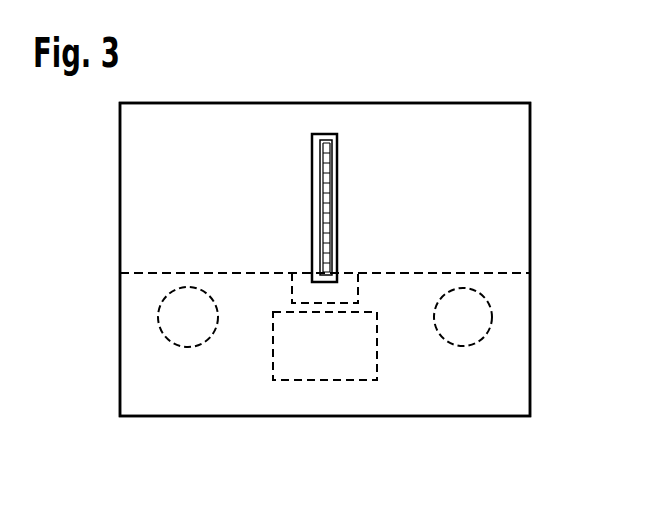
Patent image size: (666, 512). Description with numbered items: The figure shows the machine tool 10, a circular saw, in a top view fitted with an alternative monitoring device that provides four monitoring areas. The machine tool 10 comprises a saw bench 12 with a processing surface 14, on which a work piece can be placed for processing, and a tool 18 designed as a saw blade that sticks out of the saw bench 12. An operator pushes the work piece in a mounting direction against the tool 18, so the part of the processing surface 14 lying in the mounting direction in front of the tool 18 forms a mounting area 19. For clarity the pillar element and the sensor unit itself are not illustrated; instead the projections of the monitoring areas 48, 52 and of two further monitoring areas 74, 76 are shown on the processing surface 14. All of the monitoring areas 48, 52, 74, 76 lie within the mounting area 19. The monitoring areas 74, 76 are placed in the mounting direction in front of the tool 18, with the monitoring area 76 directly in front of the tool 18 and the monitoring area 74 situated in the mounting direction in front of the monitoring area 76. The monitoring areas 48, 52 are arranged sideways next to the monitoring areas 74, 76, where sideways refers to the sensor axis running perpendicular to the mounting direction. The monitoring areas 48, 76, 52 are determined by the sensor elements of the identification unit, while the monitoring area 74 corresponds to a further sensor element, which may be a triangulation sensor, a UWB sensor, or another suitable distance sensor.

The machine tool 10 is at (580, 104).
The saw bench 12 is at (531, 248).
The processing surface 14 is at (481, 140).
The tool 18 is at (330, 192).
The mounting area 19 is at (228, 273).
The monitoring area 48 is at (158, 316).
The monitoring area 52 is at (492, 315).
The monitoring area 74 is at (299, 381).
The monitoring area 76 is at (357, 274).